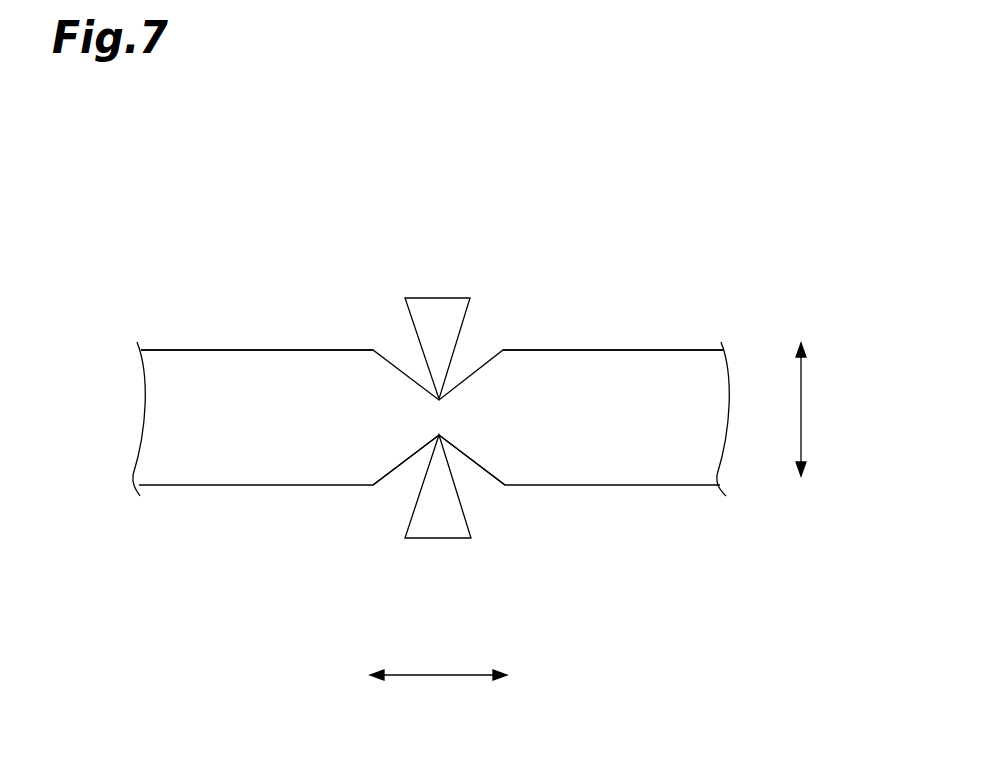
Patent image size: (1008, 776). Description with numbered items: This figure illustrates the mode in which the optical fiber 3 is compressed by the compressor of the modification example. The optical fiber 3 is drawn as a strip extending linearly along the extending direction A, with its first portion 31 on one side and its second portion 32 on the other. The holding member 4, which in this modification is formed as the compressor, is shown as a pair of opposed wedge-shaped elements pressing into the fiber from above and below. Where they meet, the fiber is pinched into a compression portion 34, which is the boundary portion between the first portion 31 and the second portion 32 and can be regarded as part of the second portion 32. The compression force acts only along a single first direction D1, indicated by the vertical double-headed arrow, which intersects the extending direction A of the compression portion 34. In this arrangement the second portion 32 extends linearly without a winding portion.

The optical fiber 3 is at (331, 363).
The second portion 32 is at (193, 363).
The first portion 31 is at (601, 363).
The compression portion 34 is at (478, 423).
The holding member 4 is at (436, 316).
The first direction D1 is at (803, 413).
The extending direction A is at (438, 678).